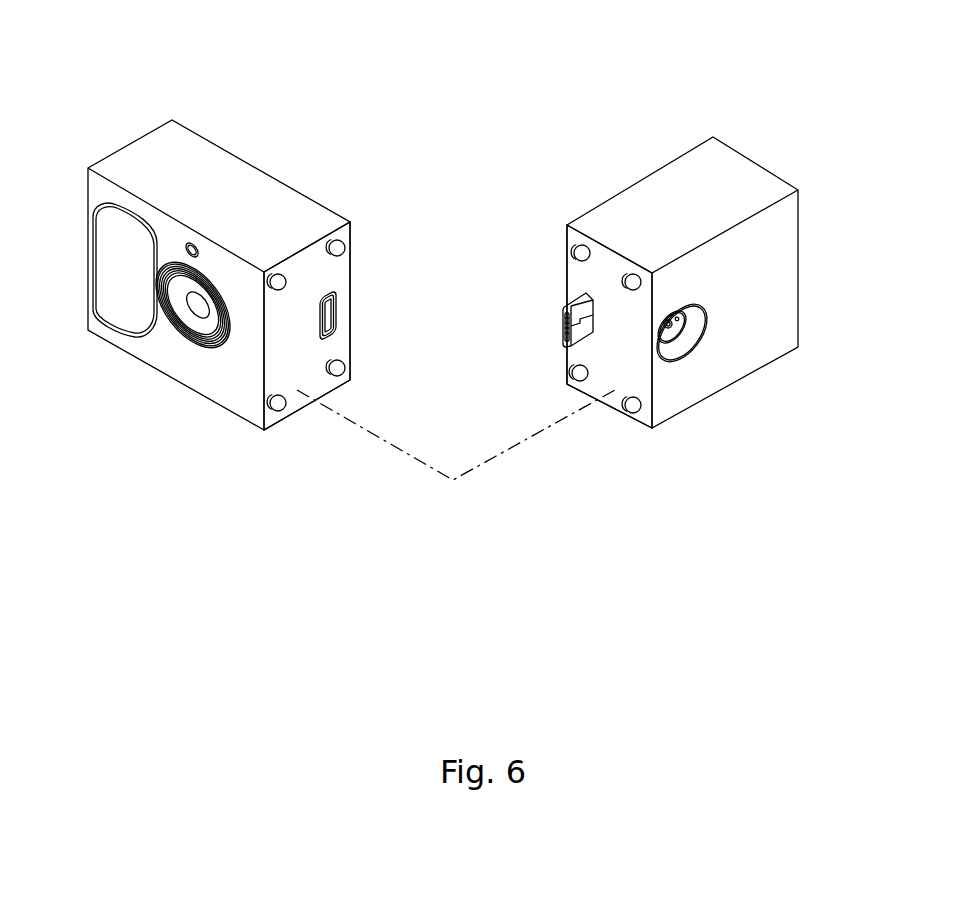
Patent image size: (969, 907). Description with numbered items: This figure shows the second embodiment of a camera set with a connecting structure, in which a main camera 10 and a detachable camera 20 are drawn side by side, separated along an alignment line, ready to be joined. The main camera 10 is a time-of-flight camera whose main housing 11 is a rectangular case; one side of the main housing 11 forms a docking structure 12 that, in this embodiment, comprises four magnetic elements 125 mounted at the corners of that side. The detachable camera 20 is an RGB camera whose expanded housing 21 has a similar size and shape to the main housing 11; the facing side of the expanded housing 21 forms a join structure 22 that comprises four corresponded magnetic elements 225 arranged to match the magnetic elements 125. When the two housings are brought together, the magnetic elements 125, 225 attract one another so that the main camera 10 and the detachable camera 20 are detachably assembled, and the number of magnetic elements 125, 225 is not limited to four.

The main camera 10 is at (118, 135).
The main housing 11 is at (185, 138).
The docking structure 12 is at (313, 425).
The magnetic elements 125 is at (338, 248).
The detachable camera 20 is at (790, 371).
The expanded housing 21 is at (732, 160).
The join structure 22 is at (610, 420).
The corresponded magnetic elements 225 is at (636, 408).